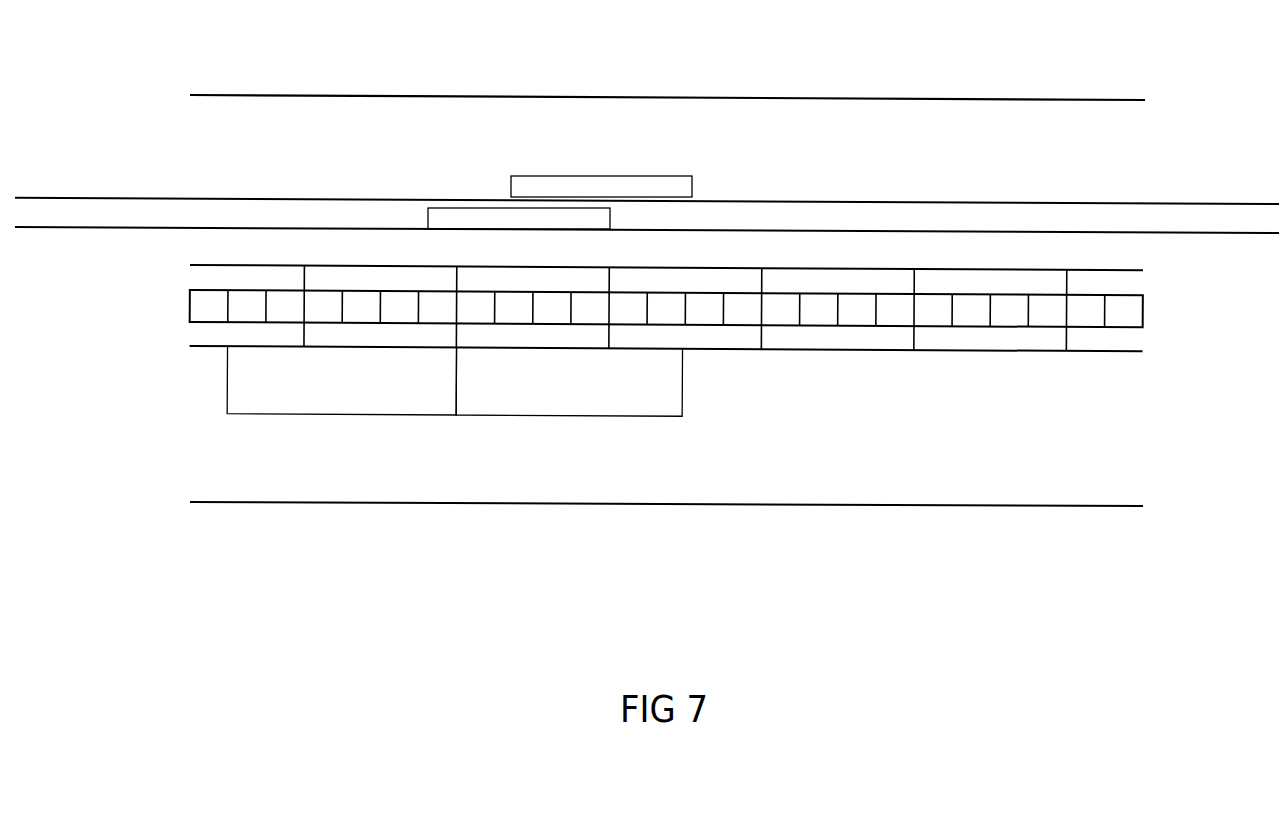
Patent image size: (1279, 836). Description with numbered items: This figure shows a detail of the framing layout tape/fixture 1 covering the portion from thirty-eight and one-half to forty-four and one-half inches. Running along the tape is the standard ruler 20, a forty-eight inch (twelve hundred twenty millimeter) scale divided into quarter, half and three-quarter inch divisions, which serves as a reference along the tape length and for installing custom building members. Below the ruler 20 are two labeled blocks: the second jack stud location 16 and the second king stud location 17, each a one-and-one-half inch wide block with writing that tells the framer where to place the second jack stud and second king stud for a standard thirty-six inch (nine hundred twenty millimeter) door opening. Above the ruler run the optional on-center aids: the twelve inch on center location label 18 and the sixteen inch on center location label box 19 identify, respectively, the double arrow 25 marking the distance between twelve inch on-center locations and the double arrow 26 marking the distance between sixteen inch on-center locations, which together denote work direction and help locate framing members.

The framing layout tape/fixture 1 is at (322, 95).
The second jack stud location for 36 inch door 16 is at (337, 415).
The second king stud location for 36 inch door 17 is at (552, 416).
The 12 inch on center location label 18 is at (458, 198).
The 16 inch on center location label box 19 is at (602, 176).
The standard ruler 20 is at (857, 325).
The 12 inch on center double arrow 25 is at (715, 229).
The 16 inch on center double arrow 26 is at (833, 205).